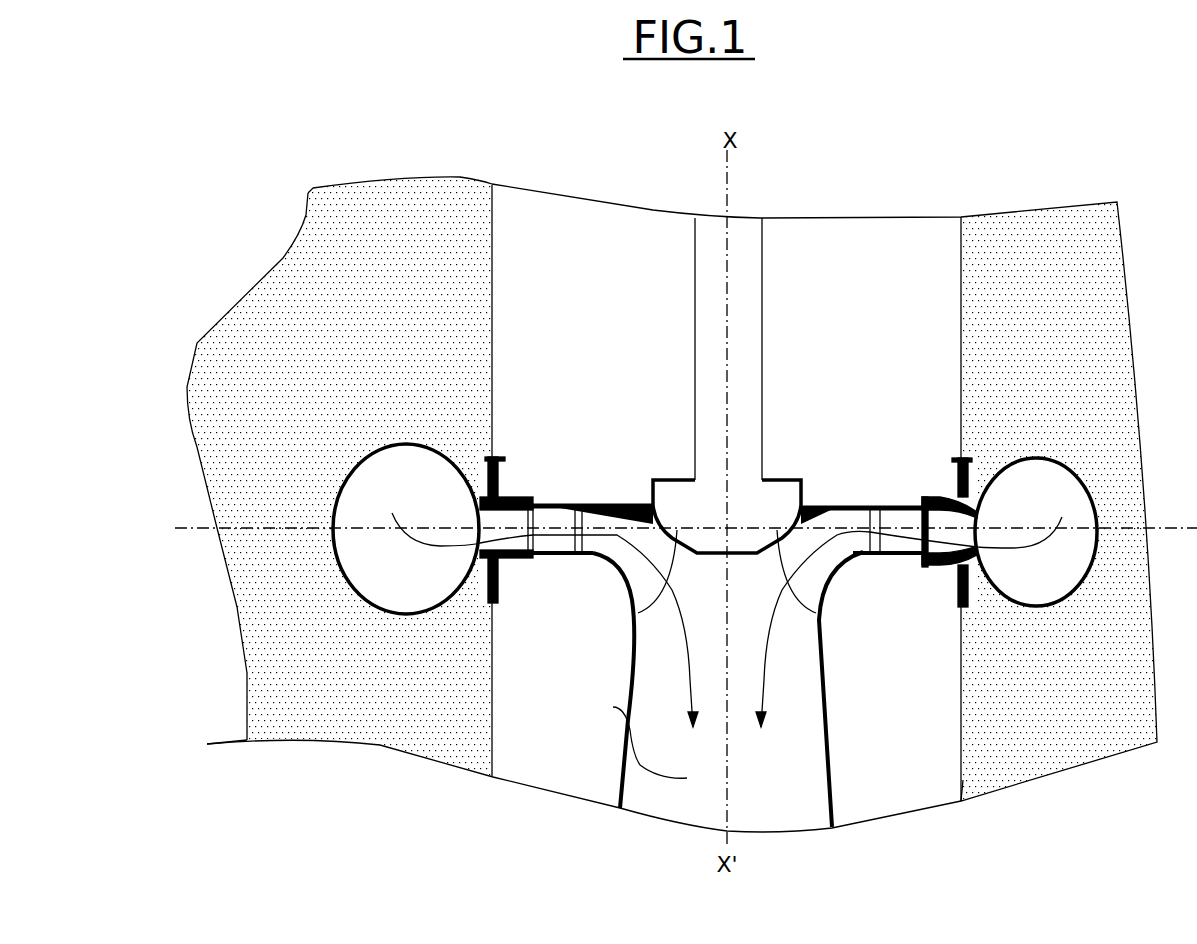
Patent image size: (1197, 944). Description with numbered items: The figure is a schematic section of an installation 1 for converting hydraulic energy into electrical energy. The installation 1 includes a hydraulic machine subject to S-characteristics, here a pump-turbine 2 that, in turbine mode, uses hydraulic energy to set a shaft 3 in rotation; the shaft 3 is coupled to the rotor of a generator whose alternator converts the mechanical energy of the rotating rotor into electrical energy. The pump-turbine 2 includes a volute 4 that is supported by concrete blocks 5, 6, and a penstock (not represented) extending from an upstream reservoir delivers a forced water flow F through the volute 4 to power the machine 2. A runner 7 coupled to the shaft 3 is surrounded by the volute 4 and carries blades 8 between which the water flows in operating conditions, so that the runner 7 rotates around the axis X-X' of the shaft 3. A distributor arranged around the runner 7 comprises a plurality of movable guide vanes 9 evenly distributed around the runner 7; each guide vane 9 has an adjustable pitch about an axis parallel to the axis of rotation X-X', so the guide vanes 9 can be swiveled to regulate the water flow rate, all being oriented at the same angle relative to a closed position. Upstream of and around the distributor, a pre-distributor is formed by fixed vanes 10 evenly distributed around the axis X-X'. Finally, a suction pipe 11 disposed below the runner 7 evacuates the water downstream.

The installation 1 is at (1012, 203).
The pump-turbine 2 is at (568, 393).
The shaft 3 is at (702, 293).
The volute 4 is at (398, 584).
The concrete block 5 is at (343, 693).
The concrete block 6 is at (978, 760).
The runner 7 is at (837, 583).
The blades 8 is at (782, 557).
The movable guide vanes 9 is at (896, 548).
The fixed vanes 10 is at (949, 520).
The suction pipe 11 is at (613, 707).